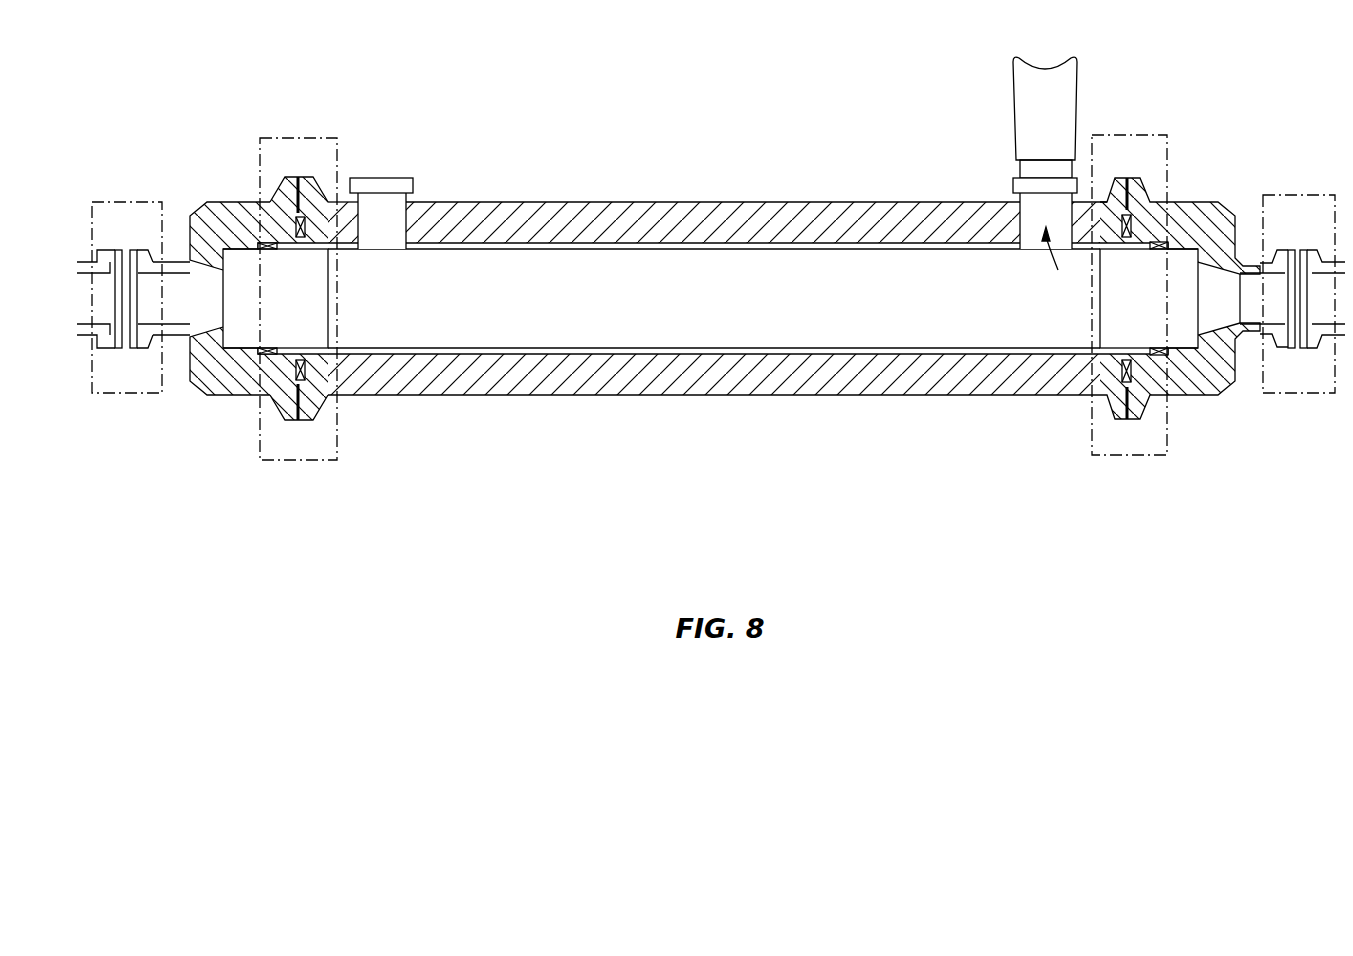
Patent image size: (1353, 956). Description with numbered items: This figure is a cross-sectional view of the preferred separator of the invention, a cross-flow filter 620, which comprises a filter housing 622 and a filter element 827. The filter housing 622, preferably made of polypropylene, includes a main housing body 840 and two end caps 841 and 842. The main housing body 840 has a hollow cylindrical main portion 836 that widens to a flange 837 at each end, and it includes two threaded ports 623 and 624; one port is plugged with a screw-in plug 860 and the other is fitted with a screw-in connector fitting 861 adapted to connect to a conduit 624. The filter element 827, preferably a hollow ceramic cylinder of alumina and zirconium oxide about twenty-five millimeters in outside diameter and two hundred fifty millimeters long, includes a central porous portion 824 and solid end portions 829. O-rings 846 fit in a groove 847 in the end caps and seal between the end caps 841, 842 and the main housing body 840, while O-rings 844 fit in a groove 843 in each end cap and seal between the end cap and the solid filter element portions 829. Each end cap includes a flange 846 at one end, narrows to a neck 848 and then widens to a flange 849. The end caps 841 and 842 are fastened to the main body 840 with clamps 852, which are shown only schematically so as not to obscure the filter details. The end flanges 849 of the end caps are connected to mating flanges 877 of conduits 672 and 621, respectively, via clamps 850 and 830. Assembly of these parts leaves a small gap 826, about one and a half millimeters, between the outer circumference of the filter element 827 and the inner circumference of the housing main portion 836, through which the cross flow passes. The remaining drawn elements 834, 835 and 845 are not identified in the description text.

The cross-flow filter 620 is at (308, 534).
The conduit 621 is at (1347, 337).
The filter housing 622 is at (808, 200).
The threaded port 623 is at (1044, 272).
The threaded port / conduit 624 is at (384, 240).
The conduit 672 is at (85, 337).
The central porous portion 824 is at (703, 306).
The gap 826 is at (617, 250).
The filter element 827 is at (450, 250).
The solid end portion 829 is at (328, 305).
The clamp 830 is at (1290, 195).
The flange plate 834 is at (307, 421).
The flange 835 is at (291, 421).
The hollow cylindrical main portion 836 is at (662, 208).
The flange 837 is at (313, 181).
The main housing body 840 is at (557, 208).
The end cap 841 is at (237, 204).
The end cap 842 is at (1188, 200).
The groove 843 is at (268, 352).
The O-ring 844 is at (277, 353).
The shaft 845 is at (176, 288).
The O-ring / flange 846 is at (308, 372).
The groove 847 is at (338, 380).
The neck 848 is at (180, 337).
The flange 849 is at (145, 250).
The clamp 850 is at (122, 202).
The clamp 852 is at (322, 137).
The screw-in plug 860 is at (407, 180).
The screw-in connector fitting 861 is at (1013, 184).
The mating flange 877 is at (100, 249).